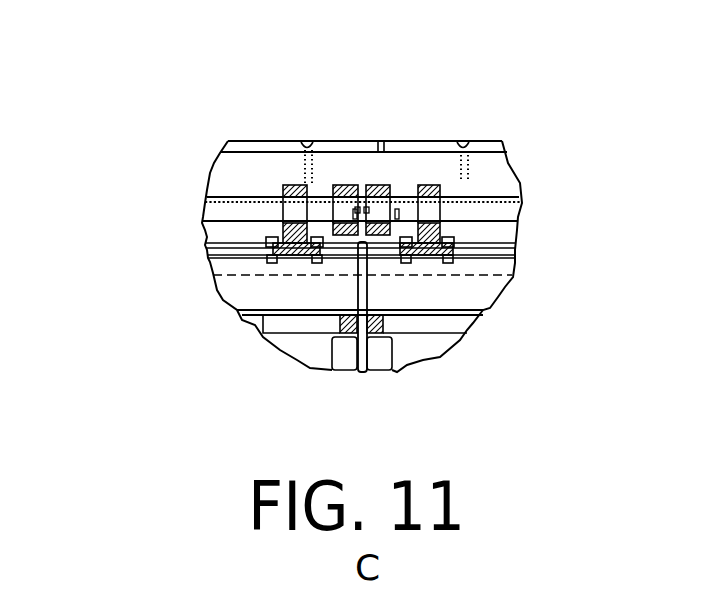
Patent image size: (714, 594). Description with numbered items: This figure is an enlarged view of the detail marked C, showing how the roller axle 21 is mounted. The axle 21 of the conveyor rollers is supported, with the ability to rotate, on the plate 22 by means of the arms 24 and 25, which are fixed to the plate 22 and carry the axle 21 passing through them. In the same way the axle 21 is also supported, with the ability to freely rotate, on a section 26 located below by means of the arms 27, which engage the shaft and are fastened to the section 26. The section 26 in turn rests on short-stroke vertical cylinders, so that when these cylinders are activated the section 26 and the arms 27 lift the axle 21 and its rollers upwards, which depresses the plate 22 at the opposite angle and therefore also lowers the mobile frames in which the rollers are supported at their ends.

The axle 21 is at (483, 210).
The plate 22 is at (482, 147).
The arm 24 is at (337, 152).
The arm 25 is at (377, 185).
The section 26 is at (268, 314).
The arm 27 is at (282, 237).